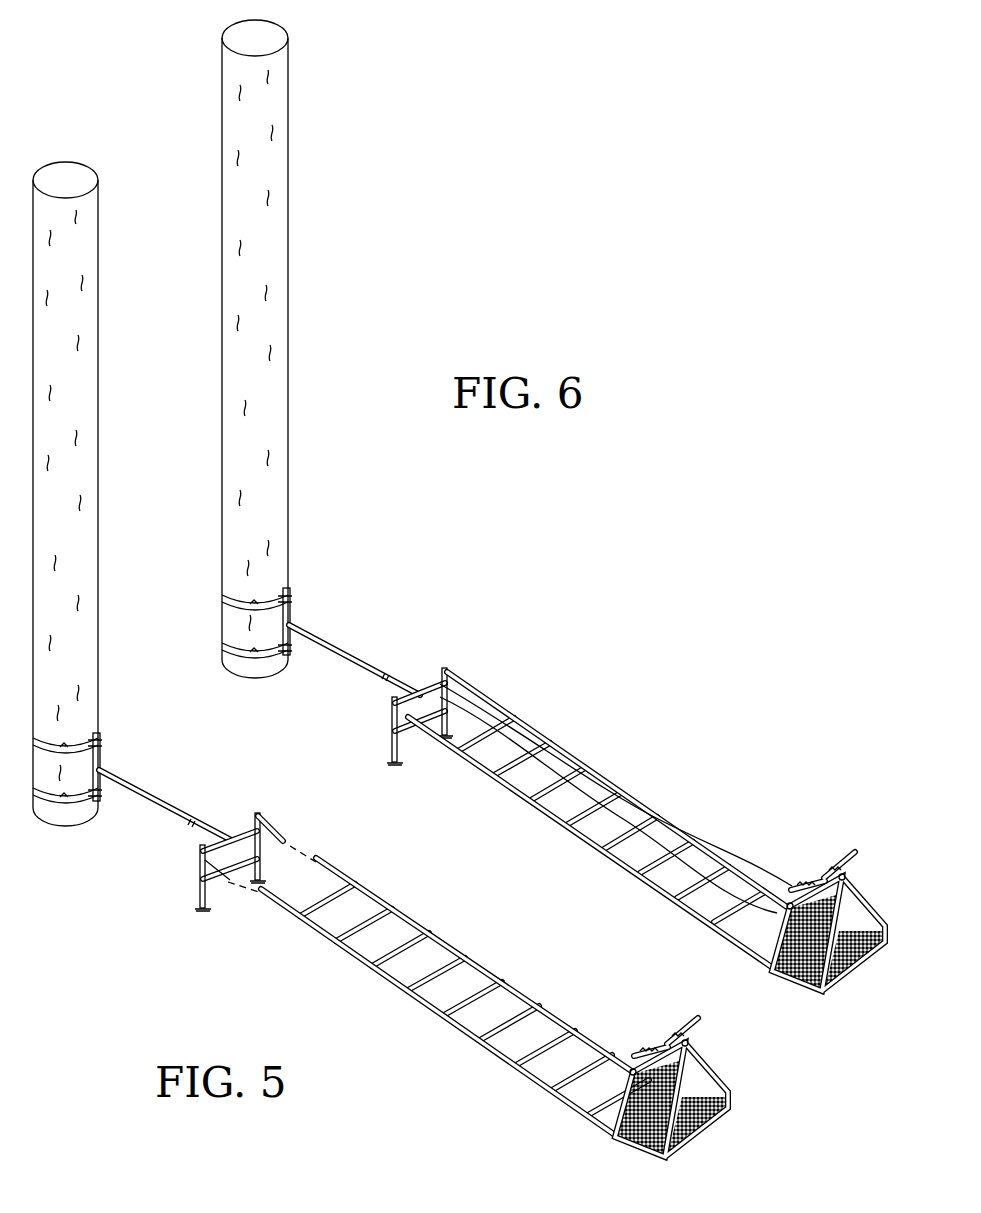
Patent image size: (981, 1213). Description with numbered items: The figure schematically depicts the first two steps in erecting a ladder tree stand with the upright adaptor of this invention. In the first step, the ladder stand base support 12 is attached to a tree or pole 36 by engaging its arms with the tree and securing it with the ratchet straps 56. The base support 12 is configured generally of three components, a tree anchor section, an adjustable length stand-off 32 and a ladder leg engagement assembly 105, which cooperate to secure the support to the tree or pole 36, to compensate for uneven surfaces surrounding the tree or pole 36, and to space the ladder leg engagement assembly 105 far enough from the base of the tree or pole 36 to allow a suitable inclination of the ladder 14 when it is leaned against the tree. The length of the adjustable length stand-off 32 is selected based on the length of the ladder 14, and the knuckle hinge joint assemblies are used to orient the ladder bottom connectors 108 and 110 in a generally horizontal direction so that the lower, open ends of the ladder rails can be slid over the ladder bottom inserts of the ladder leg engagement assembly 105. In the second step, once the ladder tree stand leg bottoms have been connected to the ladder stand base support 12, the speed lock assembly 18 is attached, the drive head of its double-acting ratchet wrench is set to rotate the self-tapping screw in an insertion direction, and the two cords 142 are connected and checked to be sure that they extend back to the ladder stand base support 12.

In FIG. 5, the tree or pole 36 is at (76, 300).
In FIG. 6, the tree or pole 36 is at (270, 210).
In FIG. 5, the adjustable length stand-off 32 is at (165, 790).
In FIG. 5, the ratchet straps 56 is at (40, 793).
In FIG. 5, the ladder stand base support 12 is at (152, 831).
In FIG. 5, the support stand 105 is at (262, 806).
In FIG. 5, the ladder bottom connector 108 is at (285, 842).
In FIG. 5, the ladder bottom connector 110 is at (214, 892).
In FIG. 5, the ladder 14 is at (461, 950).
In FIG. 6, the cords 142 is at (728, 852).
In FIG. 5, the speed lock assembly 18 is at (671, 1087).
In FIG. 6, the speed lock assembly 18 is at (826, 871).